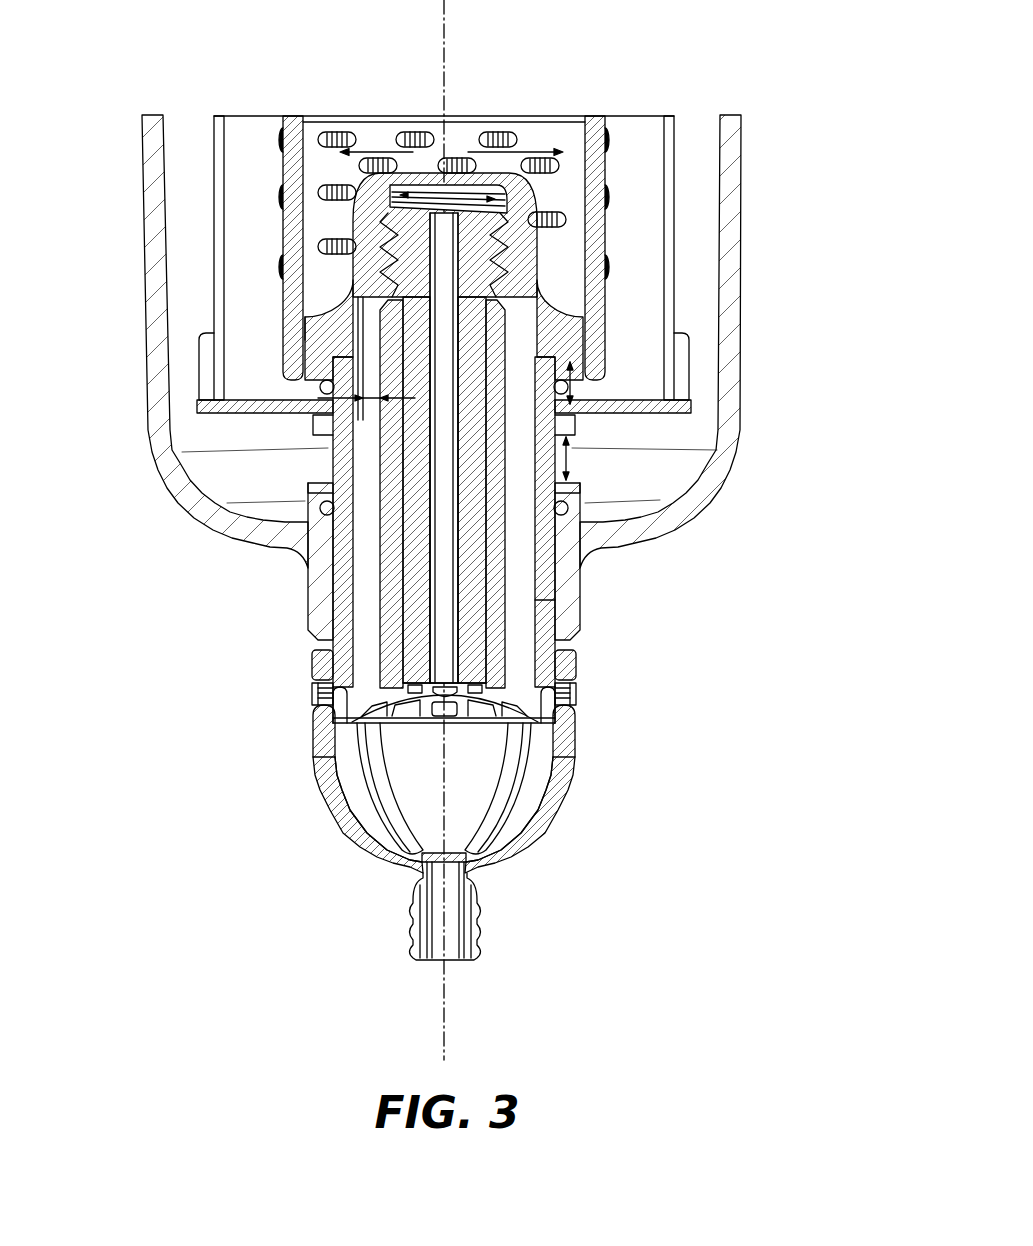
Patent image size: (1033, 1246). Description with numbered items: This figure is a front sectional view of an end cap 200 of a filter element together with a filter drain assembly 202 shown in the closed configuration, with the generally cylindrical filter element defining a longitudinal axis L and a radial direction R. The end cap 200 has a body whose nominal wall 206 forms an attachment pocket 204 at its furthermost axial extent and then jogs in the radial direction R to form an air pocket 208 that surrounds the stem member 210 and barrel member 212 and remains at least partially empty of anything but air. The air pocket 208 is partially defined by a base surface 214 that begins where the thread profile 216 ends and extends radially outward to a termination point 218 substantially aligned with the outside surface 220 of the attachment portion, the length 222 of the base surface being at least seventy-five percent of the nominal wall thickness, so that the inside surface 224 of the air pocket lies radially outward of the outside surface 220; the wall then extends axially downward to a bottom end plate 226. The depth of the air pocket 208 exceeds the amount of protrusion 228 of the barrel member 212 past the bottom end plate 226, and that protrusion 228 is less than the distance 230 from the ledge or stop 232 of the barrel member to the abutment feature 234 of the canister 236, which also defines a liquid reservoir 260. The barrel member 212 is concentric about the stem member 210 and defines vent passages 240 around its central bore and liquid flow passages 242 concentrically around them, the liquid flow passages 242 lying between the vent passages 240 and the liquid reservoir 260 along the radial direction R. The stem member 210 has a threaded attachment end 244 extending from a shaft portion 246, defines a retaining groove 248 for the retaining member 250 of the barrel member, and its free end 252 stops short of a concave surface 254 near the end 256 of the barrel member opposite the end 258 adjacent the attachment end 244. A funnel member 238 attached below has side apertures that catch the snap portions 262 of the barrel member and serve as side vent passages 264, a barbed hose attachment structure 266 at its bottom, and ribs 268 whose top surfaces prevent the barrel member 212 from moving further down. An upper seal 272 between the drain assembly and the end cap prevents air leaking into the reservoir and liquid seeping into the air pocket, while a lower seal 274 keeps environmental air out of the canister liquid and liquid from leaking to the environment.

The end cap 200 is at (607, 262).
The filter drain assembly 202 is at (585, 782).
The attachment pocket 204 is at (470, 197).
The nominal wall 206 is at (365, 293).
The air pocket 208 is at (347, 330).
The stem member 210 is at (480, 323).
The barrel member 212 is at (548, 600).
The base surface 214 is at (470, 305).
The thread profile 216 is at (428, 205).
The termination point 218 is at (353, 225).
The outside surface 220 is at (289, 115).
The length 222 is at (327, 418).
The inside surface 224 is at (340, 355).
The bottom end plate 226 is at (580, 400).
The amount of protrusion 228 is at (578, 376).
The distance 230 is at (568, 457).
The ledge or stop 232 is at (577, 420).
The abutment feature 234 is at (580, 488).
The canister 236 is at (741, 340).
The funnel member 238 is at (362, 848).
The vent passages 240 is at (403, 517).
The liquid flow passages 242 is at (365, 625).
The attachment end 244 is at (508, 185).
The shaft portion 246 is at (480, 673).
The retaining groove 248 is at (570, 703).
The retaining member 250 is at (407, 657).
The free end 252 is at (430, 703).
The concave surface 254 is at (493, 797).
The end of the barrel member 256 is at (565, 758).
The end of the barrel member 258 is at (215, 333).
The liquid reservoir 260 is at (449, 475).
The snap portions 262 is at (325, 685).
The side vent passages 264 is at (316, 708).
The hose attachment structure 266 is at (493, 925).
The ribs 268 is at (390, 740).
The upper seal 272 is at (322, 387).
The lower seal 274 is at (562, 512).
The radial direction R is at (380, 160).
The longitudinal axis L is at (445, 1023).